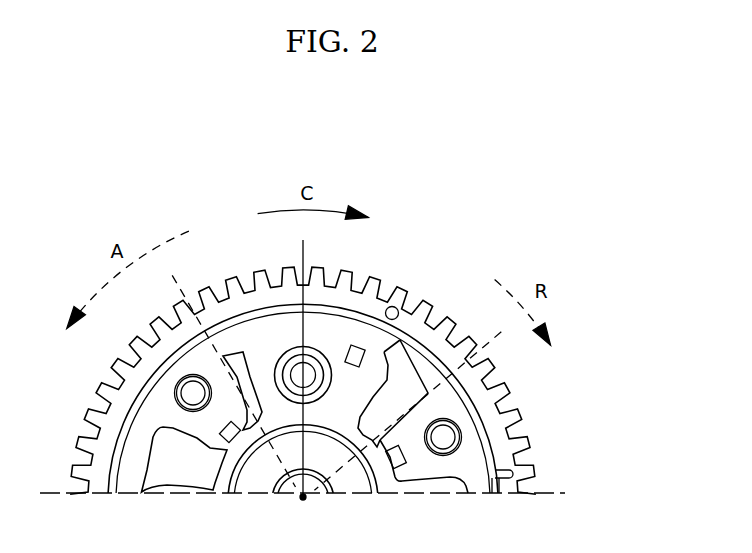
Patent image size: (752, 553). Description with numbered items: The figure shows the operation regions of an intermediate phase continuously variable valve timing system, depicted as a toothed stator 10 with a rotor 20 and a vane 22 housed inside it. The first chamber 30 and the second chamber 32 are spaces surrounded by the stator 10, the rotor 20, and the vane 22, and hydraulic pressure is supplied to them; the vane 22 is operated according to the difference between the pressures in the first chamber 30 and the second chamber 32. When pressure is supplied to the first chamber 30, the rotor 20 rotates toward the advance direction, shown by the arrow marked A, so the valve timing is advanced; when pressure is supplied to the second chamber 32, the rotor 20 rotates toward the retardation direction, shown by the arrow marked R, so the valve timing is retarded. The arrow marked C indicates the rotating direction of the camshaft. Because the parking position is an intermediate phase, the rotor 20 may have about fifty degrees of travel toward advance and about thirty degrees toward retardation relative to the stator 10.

The stator 10 is at (316, 340).
The rotor 20 is at (475, 353).
The vane 22 is at (379, 393).
The first chamber 30 is at (235, 378).
The second chamber 32 is at (397, 397).